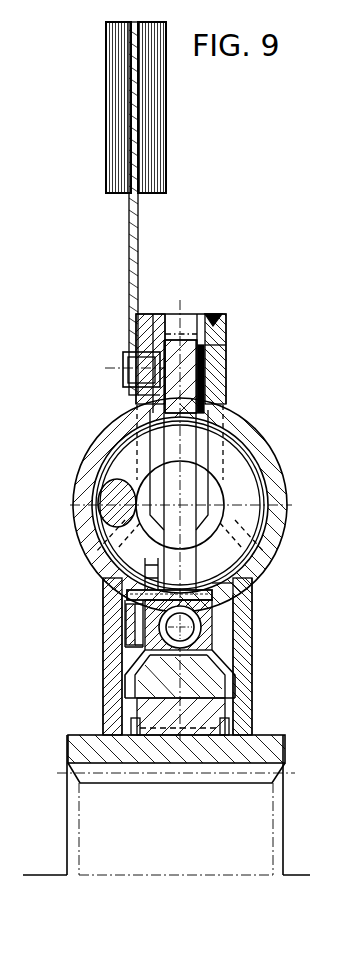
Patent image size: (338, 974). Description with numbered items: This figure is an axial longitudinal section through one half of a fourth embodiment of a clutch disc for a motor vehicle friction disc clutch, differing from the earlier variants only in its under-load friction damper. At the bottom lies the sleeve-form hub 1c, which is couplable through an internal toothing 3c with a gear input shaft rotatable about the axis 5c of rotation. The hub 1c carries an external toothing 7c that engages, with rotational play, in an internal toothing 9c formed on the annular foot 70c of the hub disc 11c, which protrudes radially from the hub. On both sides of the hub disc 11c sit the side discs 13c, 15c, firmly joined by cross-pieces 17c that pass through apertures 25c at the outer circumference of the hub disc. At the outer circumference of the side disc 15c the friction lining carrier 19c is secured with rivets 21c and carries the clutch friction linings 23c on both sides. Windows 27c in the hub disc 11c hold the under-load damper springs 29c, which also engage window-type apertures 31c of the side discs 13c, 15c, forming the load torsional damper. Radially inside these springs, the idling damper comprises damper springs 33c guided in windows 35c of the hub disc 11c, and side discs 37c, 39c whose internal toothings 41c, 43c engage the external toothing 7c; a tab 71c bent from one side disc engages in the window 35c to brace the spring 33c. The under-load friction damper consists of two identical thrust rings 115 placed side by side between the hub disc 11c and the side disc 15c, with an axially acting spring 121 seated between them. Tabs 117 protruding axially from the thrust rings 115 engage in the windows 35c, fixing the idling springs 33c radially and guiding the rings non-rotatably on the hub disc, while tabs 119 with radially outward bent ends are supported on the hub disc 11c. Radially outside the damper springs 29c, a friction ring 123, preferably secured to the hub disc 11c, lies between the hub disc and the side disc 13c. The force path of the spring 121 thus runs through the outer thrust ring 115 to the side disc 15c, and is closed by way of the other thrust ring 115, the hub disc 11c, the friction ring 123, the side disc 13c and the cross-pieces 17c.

The clutch friction linings 23c is at (150, 117).
The friction lining carrier 19c is at (131, 253).
The cross-pieces 17c is at (160, 314).
The apertures 25c is at (185, 328).
The friction ring 123 is at (205, 352).
The rivets 21c is at (124, 355).
The hub disc 11c is at (172, 390).
The windows 27c is at (225, 400).
The side disc 15c is at (100, 436).
The side disc 13c is at (262, 446).
The damper springs 29c is at (243, 487).
The window-type apertures 31c is at (78, 522).
The tabs 119 is at (120, 576).
The tabs 117 is at (252, 583).
The tab 71c is at (206, 598).
The thrust rings 115 is at (125, 600).
The spring 121 is at (126, 628).
The damper springs 33c is at (196, 627).
The side disc 39c is at (128, 660).
The windows 35c is at (214, 655).
The side disc 37c is at (235, 681).
The annular foot 70c is at (155, 683).
The internal toothing 43c is at (125, 712).
The internal toothing 9c is at (160, 731).
The internal toothing 41c is at (229, 727).
The external toothing 7c is at (237, 705).
The hub 1c is at (82, 752).
The internal toothing 3c is at (95, 780).
The axis of rotation 5c is at (72, 876).